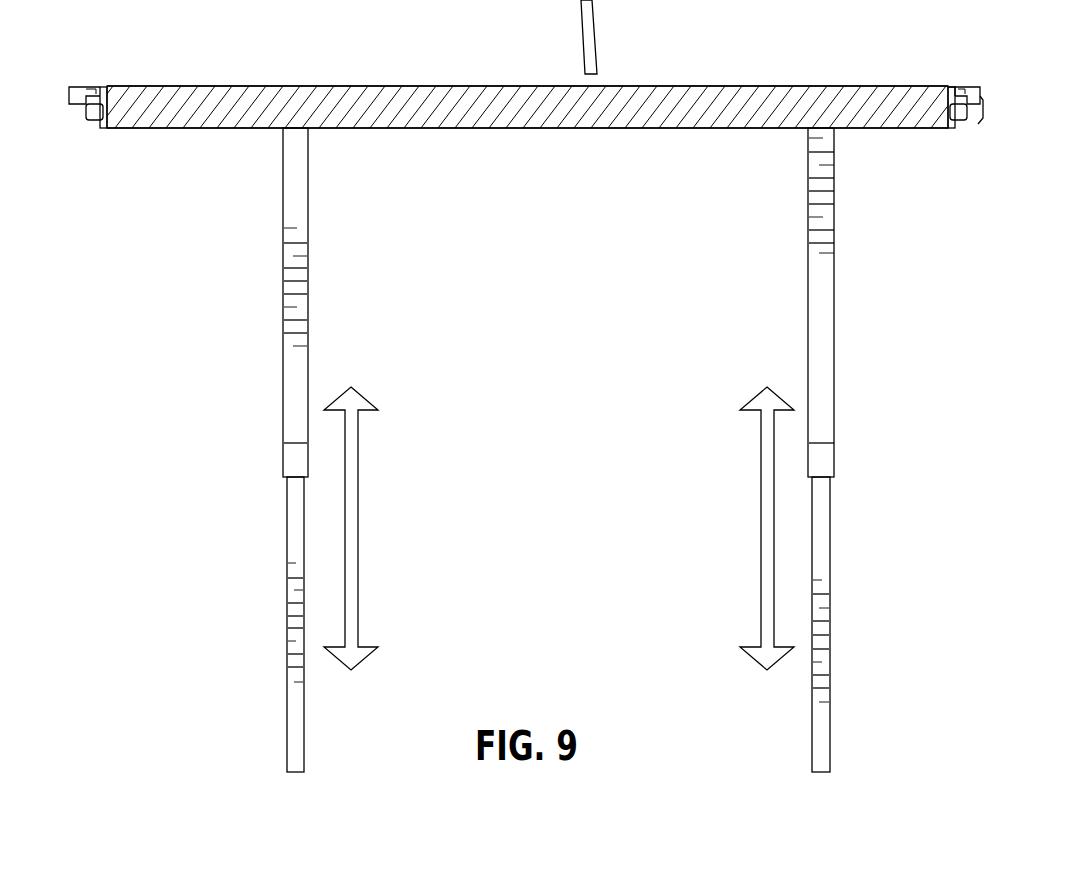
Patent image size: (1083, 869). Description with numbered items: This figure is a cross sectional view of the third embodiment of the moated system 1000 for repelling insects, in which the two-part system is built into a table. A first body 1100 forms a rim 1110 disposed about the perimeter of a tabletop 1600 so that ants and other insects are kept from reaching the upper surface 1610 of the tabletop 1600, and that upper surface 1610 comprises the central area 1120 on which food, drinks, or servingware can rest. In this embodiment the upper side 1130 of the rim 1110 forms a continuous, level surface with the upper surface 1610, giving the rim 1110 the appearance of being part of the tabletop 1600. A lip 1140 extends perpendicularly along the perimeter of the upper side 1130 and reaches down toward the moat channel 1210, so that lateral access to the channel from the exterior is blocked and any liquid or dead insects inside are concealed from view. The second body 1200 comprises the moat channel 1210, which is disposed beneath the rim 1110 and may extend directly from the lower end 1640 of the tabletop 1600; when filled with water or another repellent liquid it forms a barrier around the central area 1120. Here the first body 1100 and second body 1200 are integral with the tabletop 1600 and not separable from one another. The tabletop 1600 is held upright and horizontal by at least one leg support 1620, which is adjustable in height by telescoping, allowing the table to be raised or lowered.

The moated system 1000 is at (857, 327).
The first body 1100 is at (72, 87).
The rim 1110 is at (978, 82).
The central area 1120 is at (239, 86).
The upper side 1130 is at (952, 88).
The lip 1140 is at (978, 108).
The second body 1200 is at (93, 122).
The moat channel 1210 is at (960, 122).
The tabletop 1600 is at (208, 128).
The upper surface 1610 is at (775, 86).
The leg support 1620 is at (812, 728).
The lower end 1640 is at (578, 128).